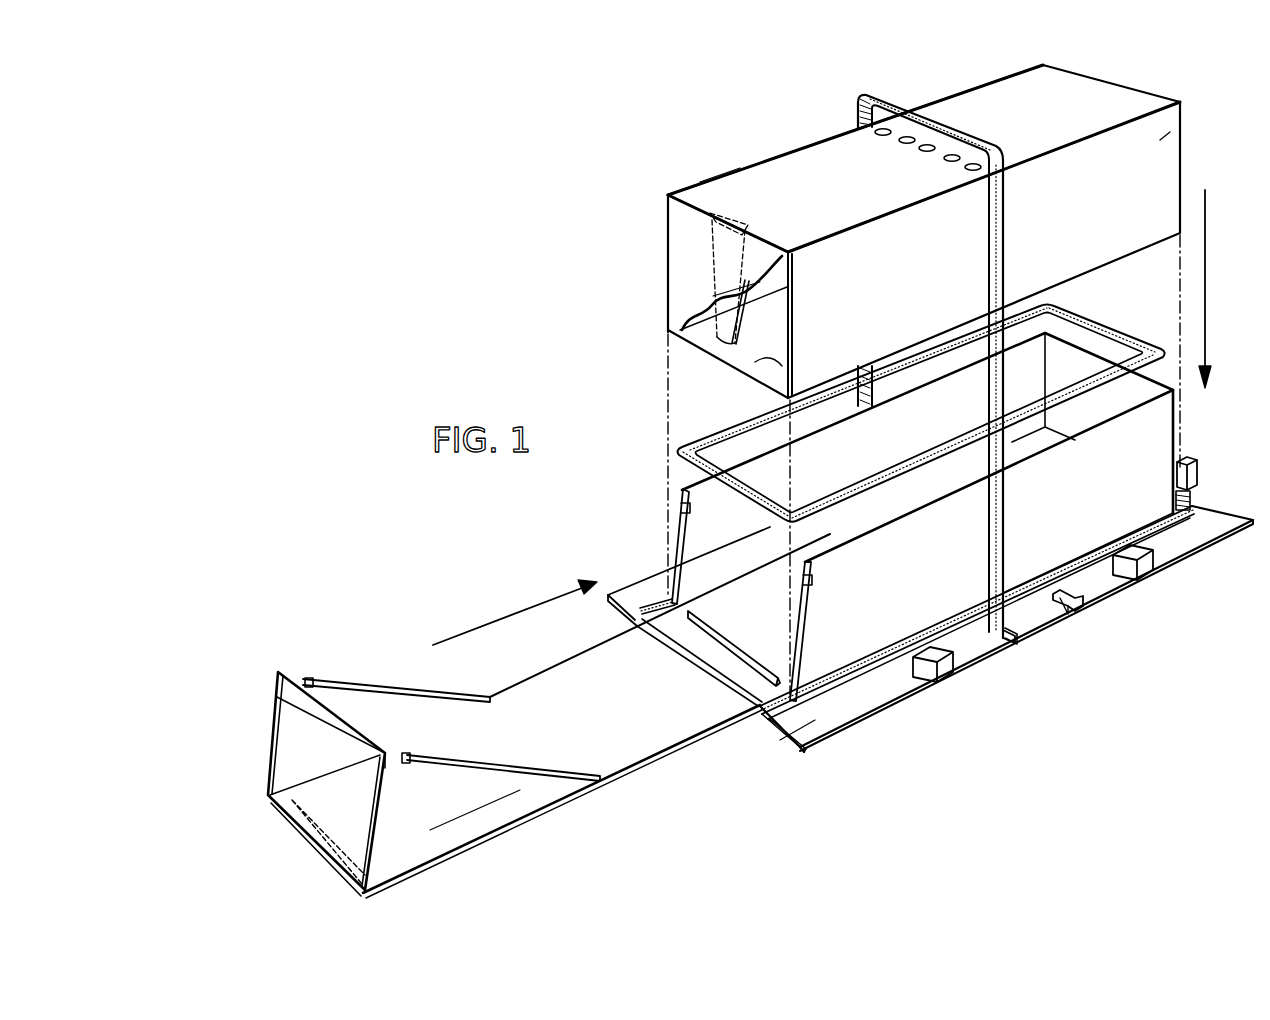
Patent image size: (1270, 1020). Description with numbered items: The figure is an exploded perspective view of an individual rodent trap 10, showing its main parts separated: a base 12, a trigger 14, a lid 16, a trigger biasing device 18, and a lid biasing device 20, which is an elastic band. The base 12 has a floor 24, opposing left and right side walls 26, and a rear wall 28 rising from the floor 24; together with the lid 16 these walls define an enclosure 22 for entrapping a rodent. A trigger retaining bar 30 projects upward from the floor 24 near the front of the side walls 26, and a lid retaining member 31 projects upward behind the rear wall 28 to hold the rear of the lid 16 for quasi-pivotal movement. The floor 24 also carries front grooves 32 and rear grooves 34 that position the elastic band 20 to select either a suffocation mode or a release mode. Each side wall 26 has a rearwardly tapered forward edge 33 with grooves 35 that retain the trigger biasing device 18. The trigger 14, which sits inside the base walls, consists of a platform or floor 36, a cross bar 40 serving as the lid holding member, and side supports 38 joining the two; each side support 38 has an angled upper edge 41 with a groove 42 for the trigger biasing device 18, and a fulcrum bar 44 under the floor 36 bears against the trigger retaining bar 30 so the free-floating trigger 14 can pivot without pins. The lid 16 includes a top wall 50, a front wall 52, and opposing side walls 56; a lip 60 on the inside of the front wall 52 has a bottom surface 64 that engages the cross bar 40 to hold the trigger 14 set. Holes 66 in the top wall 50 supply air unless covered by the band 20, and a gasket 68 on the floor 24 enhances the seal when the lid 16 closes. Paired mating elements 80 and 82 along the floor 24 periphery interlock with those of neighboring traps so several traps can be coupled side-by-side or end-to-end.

The rodent trap 10 is at (648, 148).
The base 12 is at (1215, 550).
The trigger 14 is at (635, 784).
The lid 16 is at (1185, 205).
The trigger biasing device 18 is at (1100, 326).
The lid biasing device 20 is at (858, 97).
The enclosure 22 is at (757, 612).
The floor 24 is at (780, 737).
The side walls 26 is at (770, 446).
The rear wall 28 is at (1105, 336).
The trigger retaining bar 30 is at (740, 668).
The lid retaining member 31 is at (1190, 500).
The front grooves 32 is at (1020, 636).
The forward edge 33 is at (692, 562).
The rear grooves 34 is at (1072, 608).
The grooves 35 is at (708, 520).
The platform 36 is at (574, 672).
The side supports 38 is at (495, 810).
The cross bar 40 is at (283, 700).
The angled upper edge 41 is at (376, 684).
The groove 42 is at (296, 668).
The fulcrum bar 44 is at (318, 822).
The top wall 50 is at (1120, 88).
The front wall 52 is at (678, 252).
The side walls 56 is at (722, 178).
The lip 60 is at (725, 296).
The bottom surface 64 is at (724, 346).
The holes 66 is at (952, 162).
The gasket 68 is at (812, 700).
The mating element 80 is at (1196, 488).
The mating element 82 is at (938, 678).